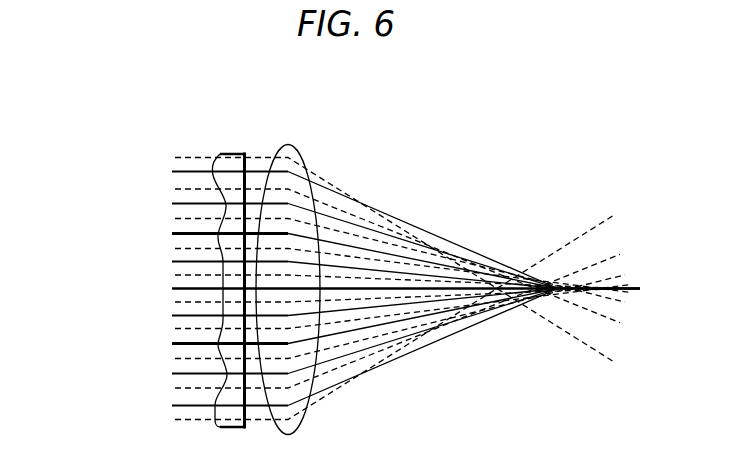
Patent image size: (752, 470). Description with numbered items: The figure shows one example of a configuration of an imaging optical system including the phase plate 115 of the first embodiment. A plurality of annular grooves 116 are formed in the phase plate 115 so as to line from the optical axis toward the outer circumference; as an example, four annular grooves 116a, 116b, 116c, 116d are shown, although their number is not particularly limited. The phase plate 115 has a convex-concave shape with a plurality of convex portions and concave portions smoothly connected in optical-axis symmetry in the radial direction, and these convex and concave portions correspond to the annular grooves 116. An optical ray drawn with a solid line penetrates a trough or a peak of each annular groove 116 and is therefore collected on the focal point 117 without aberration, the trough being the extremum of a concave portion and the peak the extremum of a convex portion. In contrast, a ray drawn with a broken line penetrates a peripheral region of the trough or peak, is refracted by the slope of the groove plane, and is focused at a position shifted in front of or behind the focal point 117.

The phase plate 115 is at (224, 152).
The annular grooves 116 is at (96, 147).
The annular groove 116a is at (146, 248).
The annular groove 116b is at (146, 219).
The annular groove 116c is at (146, 188).
The annular groove 116d is at (146, 157).
The focal point 117 is at (557, 287).